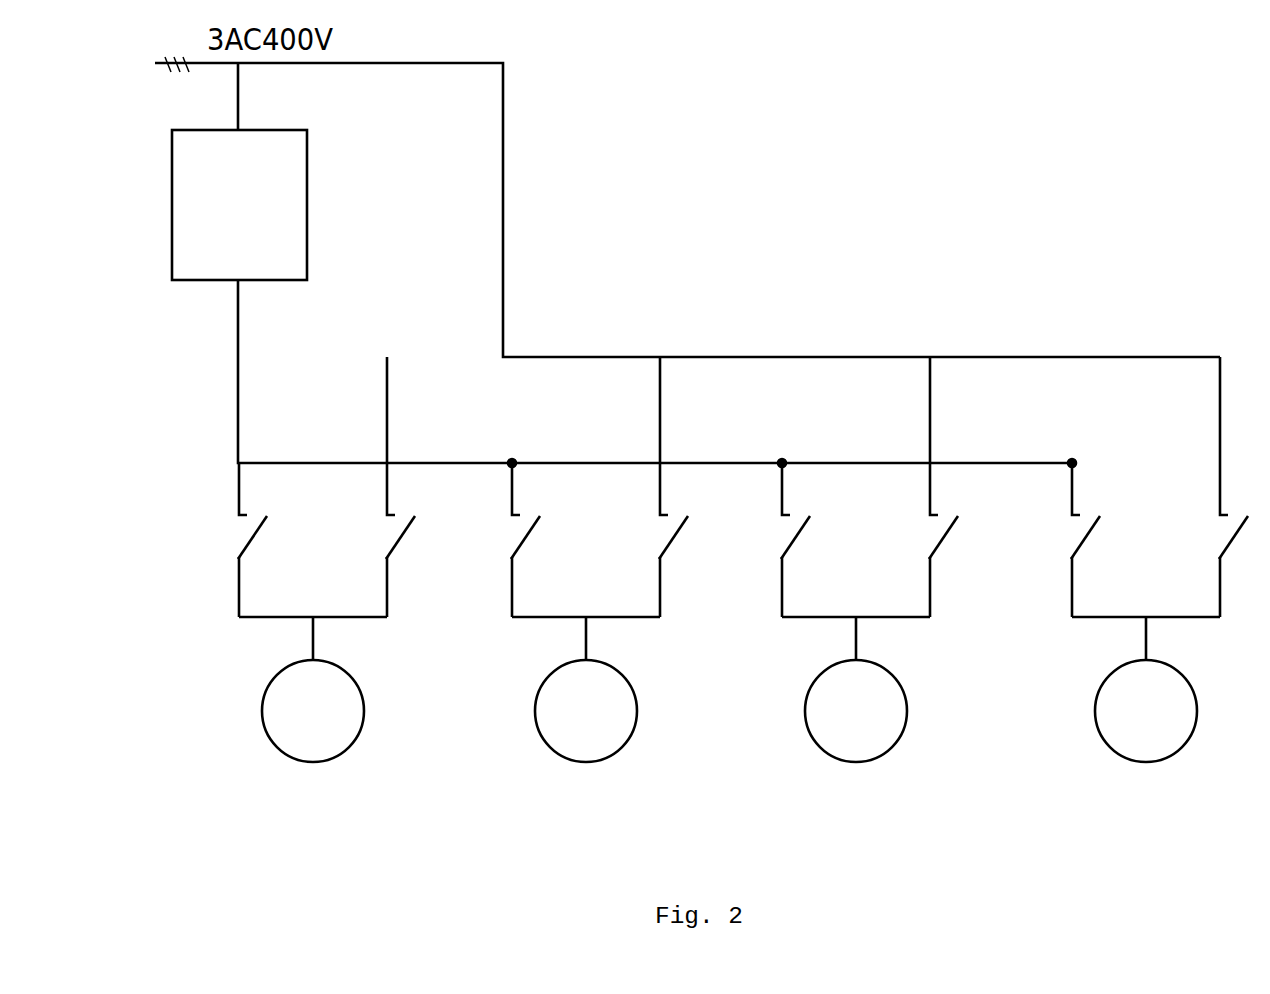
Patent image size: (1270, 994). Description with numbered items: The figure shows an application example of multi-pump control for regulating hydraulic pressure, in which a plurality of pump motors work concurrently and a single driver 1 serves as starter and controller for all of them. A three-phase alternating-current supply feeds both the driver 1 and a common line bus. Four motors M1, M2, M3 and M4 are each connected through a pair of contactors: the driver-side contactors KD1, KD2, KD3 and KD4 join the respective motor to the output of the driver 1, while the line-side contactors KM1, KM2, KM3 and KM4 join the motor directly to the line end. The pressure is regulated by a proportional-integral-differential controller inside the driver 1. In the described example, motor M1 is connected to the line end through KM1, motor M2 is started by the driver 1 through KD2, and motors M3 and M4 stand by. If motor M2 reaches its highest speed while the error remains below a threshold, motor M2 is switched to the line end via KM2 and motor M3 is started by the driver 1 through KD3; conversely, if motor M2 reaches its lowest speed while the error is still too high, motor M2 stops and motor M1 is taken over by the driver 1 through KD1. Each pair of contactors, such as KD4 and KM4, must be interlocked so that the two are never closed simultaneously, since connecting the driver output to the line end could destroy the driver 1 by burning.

The driver 1 is at (229, 217).
The driver-side contactor for motor M1 KD1 is at (254, 545).
The line-side contactor for motor M1 KM1 is at (399, 545).
The motor M1 is at (313, 689).
The driver-side contactor for motor M2 KD2 is at (529, 545).
The line-side contactor for motor M2 KM2 is at (672, 545).
The motor M2 is at (586, 689).
The driver-side contactor for motor M3 KD3 is at (797, 545).
The line-side contactor for motor M3 KM3 is at (937, 545).
The motor M3 is at (856, 689).
The driver-side contactor for motor M4 KD4 is at (1088, 545).
The line-side contactor for motor M4 KM4 is at (1229, 545).
The motor M4 is at (1146, 689).